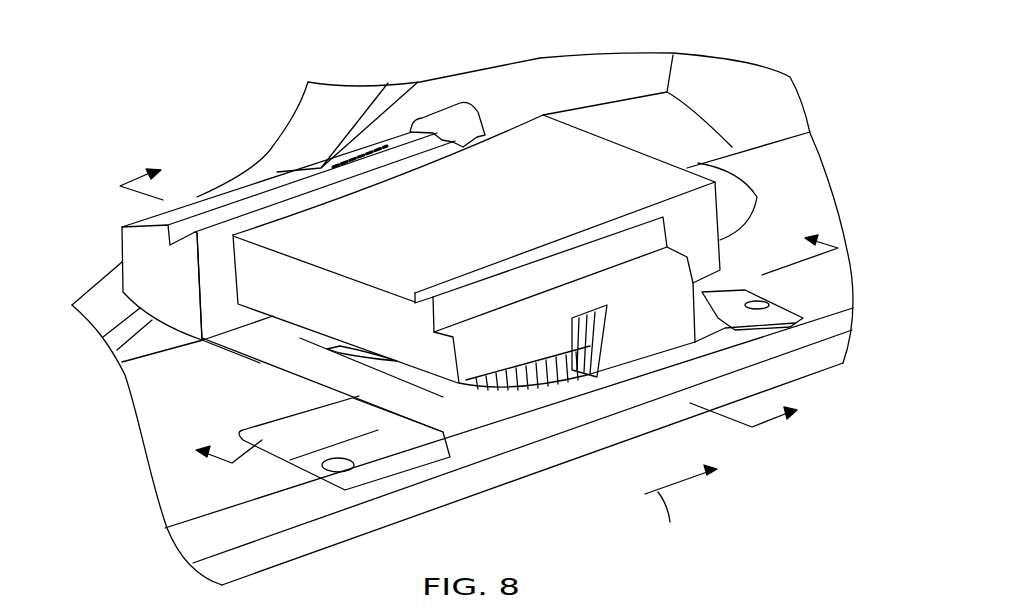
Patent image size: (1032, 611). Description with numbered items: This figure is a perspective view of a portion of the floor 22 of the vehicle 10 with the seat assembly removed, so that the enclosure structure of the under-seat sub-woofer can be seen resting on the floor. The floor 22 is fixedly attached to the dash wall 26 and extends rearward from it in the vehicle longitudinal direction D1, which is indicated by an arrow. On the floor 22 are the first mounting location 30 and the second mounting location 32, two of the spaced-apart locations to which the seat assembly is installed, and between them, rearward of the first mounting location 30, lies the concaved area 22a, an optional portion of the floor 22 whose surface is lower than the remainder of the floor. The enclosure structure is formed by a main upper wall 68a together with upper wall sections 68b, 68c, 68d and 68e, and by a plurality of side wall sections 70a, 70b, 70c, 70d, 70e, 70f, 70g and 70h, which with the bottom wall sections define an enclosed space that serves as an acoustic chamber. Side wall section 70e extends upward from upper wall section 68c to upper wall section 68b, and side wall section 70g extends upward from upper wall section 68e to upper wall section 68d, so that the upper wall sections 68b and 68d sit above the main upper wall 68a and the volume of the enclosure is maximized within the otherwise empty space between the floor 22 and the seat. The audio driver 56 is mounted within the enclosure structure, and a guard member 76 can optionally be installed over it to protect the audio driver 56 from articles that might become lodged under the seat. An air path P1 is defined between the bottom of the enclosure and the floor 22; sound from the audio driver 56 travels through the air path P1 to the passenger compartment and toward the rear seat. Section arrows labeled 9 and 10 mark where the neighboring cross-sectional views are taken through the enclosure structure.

The floor 22 is at (172, 408).
The concaved area 22a is at (487, 403).
The dash wall 26 is at (733, 90).
The first mounting location 30 is at (780, 315).
The second mounting location 32 is at (382, 462).
The audio driver 56 is at (532, 388).
The main upper wall 68a is at (490, 175).
The upper wall section 68b is at (331, 173).
The upper wall section 68c is at (225, 197).
The upper wall section 68d is at (455, 285).
The upper wall section 68e is at (585, 287).
The side wall section 70a is at (313, 300).
The side wall section 70b is at (217, 270).
The side wall section 70c is at (173, 307).
The side wall section 70d is at (135, 218).
The side wall section 70e is at (263, 187).
The side wall section 70f is at (720, 258).
The side wall section 70g is at (525, 282).
The side wall section 70h is at (636, 320).
The guard member 76 is at (590, 380).
The section line 9- 9 is at (466, 291).
The vehicle 10 is at (498, 341).
The air path P1 is at (278, 328).
The vehicle longitudinal direction D1 is at (681, 511).